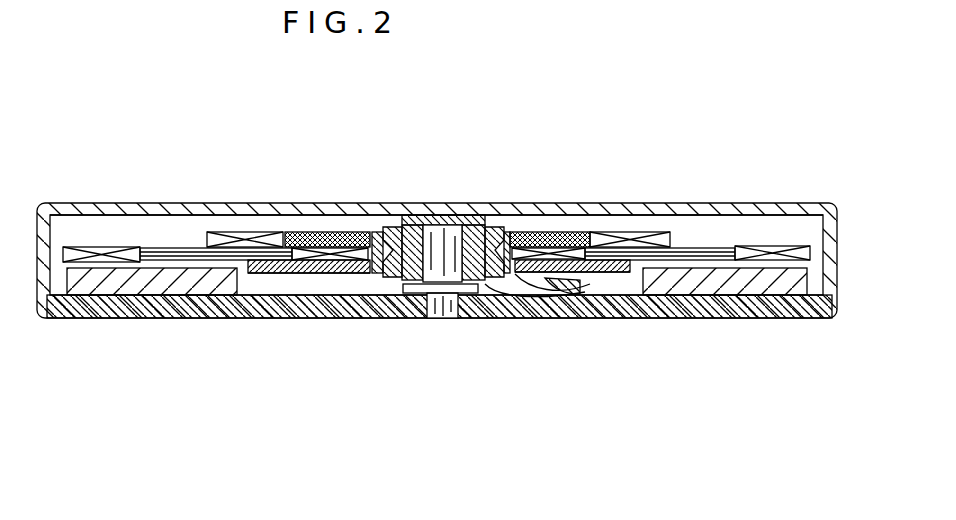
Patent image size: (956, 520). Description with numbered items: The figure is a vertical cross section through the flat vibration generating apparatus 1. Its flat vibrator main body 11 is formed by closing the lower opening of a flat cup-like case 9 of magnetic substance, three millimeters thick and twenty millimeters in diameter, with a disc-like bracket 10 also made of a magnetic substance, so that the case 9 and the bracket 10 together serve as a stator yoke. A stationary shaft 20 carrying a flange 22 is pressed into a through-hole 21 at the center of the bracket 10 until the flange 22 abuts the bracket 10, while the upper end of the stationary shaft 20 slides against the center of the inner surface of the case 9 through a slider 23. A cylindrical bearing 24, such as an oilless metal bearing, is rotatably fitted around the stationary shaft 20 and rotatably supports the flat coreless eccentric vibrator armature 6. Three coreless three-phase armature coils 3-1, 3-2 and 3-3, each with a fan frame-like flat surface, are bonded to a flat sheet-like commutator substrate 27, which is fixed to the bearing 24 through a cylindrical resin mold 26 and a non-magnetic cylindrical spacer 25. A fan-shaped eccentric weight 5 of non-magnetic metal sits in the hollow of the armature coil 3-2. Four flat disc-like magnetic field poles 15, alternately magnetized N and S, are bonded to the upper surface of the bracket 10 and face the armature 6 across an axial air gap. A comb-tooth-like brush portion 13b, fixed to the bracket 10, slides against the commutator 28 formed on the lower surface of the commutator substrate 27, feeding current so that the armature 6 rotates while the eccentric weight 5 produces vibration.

The flat vibration generating apparatus 1 is at (516, 163).
The armature coil 3-1 is at (100, 249).
The armature coil 3-2 is at (232, 246).
The armature coil 3-3 is at (752, 258).
The eccentric weight 5 is at (560, 236).
The armature 6 is at (688, 237).
The case 9 is at (143, 207).
The bracket 10 is at (113, 300).
The flat vibrator main body 11 is at (639, 203).
The brush portion 13b is at (572, 292).
The magnetic field poles 15 is at (798, 280).
The stationary shaft 20 is at (458, 214).
The through-hole 21 is at (420, 294).
The flange 22 is at (495, 286).
The slider 23 is at (427, 215).
The cylindrical bearing 24 is at (410, 214).
The cylindrical spacer 25 is at (392, 233).
The cylindrical resin mold 26 is at (372, 277).
The commutator substrate 27 is at (288, 275).
The commutator 28 is at (313, 275).